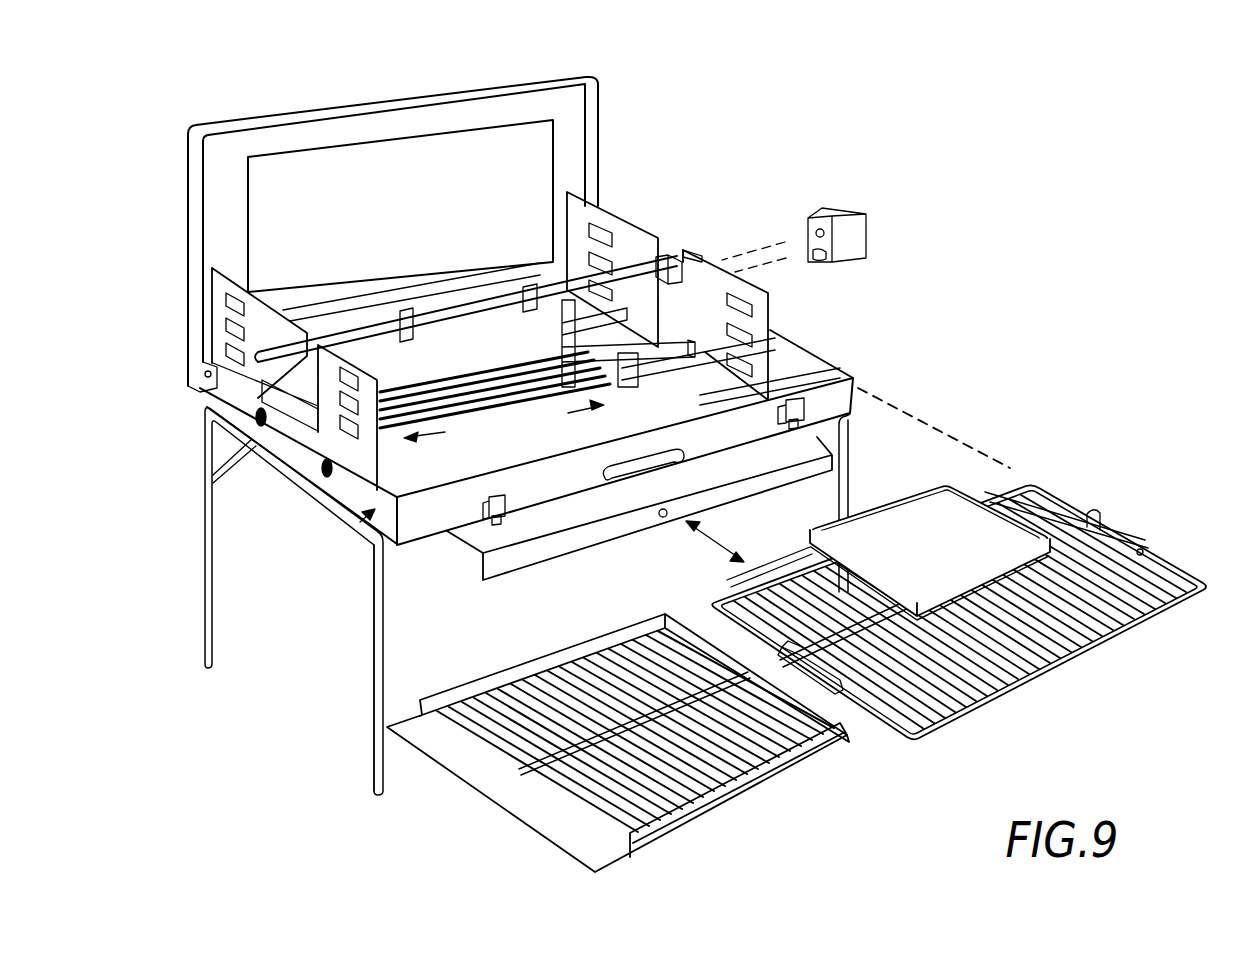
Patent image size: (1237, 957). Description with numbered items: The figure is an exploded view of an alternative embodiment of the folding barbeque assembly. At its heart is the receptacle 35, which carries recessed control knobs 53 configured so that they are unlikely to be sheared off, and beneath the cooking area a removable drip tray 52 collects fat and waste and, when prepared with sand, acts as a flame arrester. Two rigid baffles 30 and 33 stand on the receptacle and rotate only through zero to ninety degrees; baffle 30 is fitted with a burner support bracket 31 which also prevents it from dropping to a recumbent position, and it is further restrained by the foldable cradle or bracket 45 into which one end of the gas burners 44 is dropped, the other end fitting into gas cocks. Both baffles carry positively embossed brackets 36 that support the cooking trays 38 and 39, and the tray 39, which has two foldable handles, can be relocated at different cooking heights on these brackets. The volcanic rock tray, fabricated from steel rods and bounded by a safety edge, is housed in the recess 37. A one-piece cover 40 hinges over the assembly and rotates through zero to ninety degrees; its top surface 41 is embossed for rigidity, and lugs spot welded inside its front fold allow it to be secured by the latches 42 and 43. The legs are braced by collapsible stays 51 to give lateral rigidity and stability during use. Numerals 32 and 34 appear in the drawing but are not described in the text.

The baffle 30 is at (770, 320).
The burner support bracket 31 is at (680, 353).
The front left panel 32 is at (343, 413).
The baffle 33 is at (220, 310).
The guide rail 34 is at (840, 370).
The receptacle 35 is at (368, 527).
The positively embossed brackets 36 is at (757, 370).
The recess 37 is at (412, 484).
The cooking tray 38 is at (742, 787).
The cooking tray 39 is at (1060, 667).
The cover 40 is at (602, 125).
The top surface 41 is at (300, 172).
The latch 42 is at (500, 524).
The latch 43 is at (797, 428).
The gas burners 44 is at (503, 395).
The foldable cradle 45 is at (647, 352).
The collapsible stays 51 is at (207, 503).
The drip tray 52 is at (613, 527).
The recessed control knobs 53 is at (335, 505).